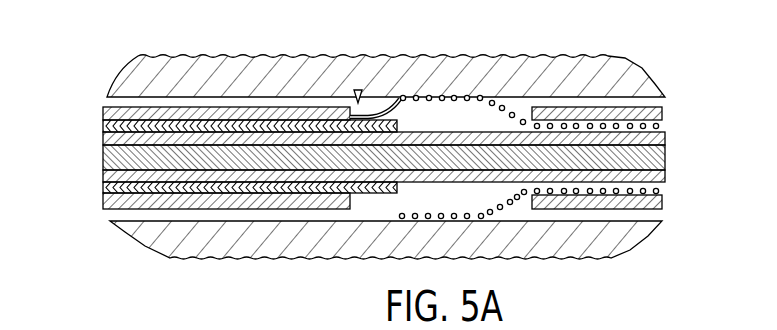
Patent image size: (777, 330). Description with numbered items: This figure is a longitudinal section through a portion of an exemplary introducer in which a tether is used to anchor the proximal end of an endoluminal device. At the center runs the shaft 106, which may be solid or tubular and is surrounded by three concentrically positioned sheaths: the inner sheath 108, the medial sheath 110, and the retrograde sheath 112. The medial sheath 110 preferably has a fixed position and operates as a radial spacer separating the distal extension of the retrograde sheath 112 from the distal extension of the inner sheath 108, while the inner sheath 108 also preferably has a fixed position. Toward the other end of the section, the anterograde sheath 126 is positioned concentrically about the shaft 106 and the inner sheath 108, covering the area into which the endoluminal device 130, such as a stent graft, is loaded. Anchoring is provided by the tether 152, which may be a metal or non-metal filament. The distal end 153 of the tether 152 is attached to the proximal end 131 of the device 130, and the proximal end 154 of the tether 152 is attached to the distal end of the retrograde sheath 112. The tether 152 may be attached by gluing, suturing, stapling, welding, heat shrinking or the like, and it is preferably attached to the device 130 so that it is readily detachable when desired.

The shaft 106 is at (106, 160).
The inner sheath 108 is at (104, 138).
The medial sheath 110 is at (138, 126).
The retrograde sheath 112 is at (207, 110).
The anterograde sheath 126 is at (655, 115).
The endoluminal device 130 is at (627, 194).
The proximal end of device 131 is at (393, 218).
The tether 152 is at (375, 112).
The distal end of tether 153 is at (405, 107).
The proximal end of tether 154 is at (358, 89).